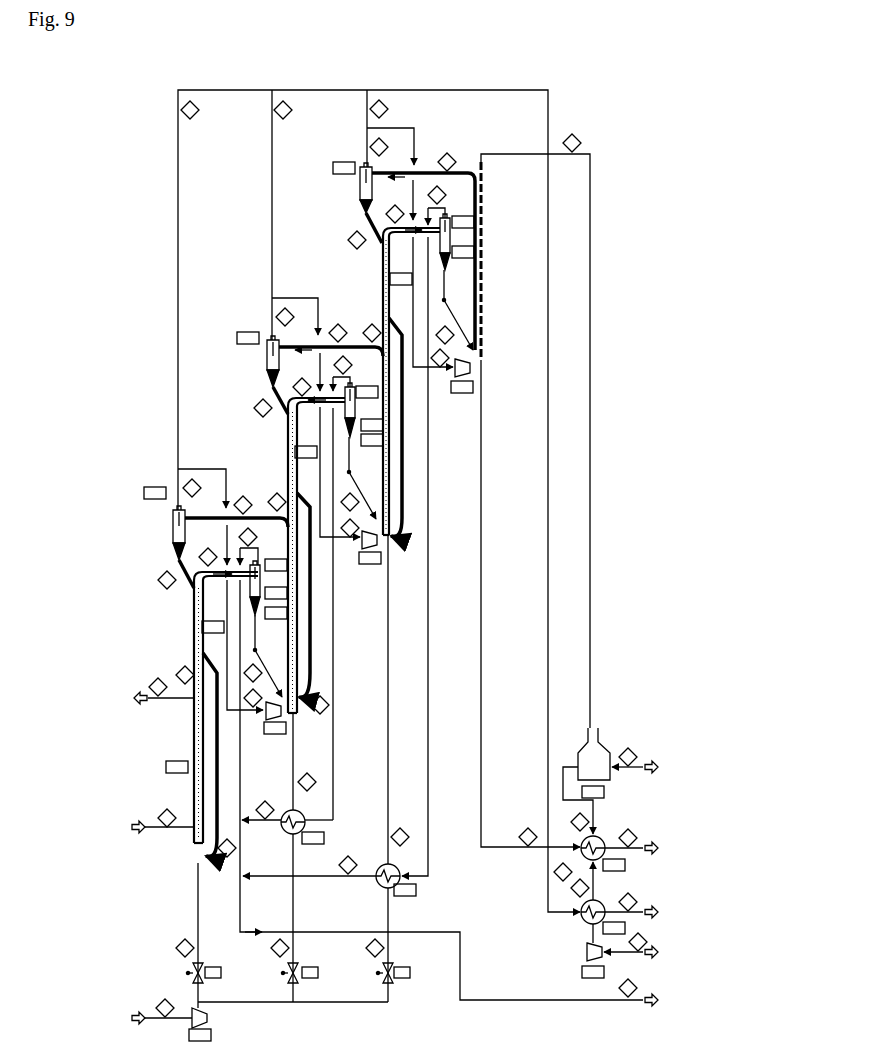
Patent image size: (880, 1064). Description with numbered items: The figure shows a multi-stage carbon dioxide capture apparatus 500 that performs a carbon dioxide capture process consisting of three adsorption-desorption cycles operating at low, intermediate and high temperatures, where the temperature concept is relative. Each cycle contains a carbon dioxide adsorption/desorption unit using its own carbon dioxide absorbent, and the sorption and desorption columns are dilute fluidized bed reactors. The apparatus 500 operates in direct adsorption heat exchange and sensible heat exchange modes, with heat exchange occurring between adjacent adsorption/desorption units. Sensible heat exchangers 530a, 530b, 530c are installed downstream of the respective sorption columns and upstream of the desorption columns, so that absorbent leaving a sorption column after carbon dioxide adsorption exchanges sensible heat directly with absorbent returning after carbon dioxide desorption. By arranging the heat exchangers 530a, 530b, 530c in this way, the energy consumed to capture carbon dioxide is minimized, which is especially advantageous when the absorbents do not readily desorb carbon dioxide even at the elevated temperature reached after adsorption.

The multi-stage carbon dioxide capture apparatus 500 is at (147, 102).
The heat exchanger 530a is at (187, 618).
The heat exchanger 530b is at (282, 441).
The heat exchanger 530c is at (375, 272).